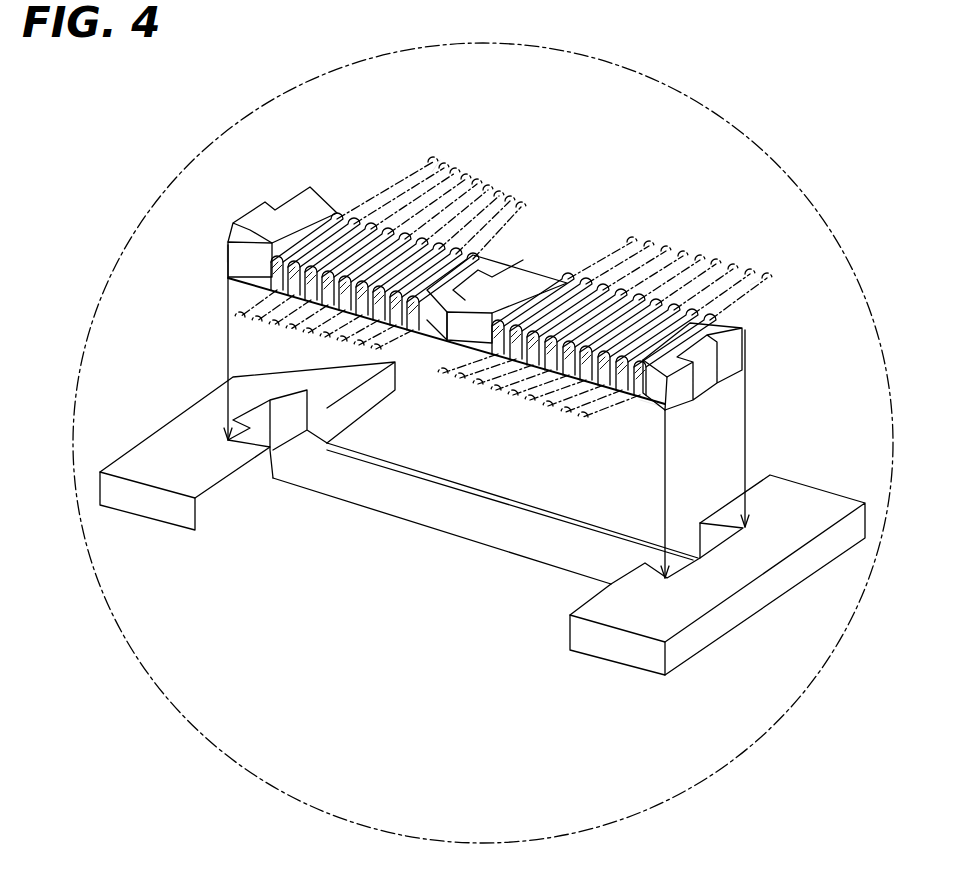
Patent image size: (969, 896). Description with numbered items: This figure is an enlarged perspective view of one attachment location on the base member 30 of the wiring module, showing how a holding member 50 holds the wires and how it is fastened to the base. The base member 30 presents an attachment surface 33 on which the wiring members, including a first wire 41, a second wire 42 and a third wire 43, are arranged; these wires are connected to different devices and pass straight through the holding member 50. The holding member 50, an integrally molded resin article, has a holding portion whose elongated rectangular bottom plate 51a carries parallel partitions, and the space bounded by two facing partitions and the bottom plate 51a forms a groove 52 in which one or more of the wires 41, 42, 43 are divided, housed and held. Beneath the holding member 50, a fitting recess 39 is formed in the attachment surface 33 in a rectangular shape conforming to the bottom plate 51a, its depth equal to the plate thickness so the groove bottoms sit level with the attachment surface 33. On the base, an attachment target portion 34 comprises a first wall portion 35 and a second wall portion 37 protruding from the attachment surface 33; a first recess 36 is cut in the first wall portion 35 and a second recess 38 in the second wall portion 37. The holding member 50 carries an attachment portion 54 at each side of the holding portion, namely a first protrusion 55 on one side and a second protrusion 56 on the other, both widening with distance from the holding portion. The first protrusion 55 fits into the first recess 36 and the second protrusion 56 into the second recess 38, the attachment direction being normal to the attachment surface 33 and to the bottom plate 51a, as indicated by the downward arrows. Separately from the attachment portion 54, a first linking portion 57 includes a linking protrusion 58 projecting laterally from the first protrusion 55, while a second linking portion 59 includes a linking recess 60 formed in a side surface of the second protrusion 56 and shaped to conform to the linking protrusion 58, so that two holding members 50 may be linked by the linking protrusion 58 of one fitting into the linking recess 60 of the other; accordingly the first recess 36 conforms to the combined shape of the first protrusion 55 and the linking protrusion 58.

The base member 30 is at (483, 469).
The attachment surface 33 is at (370, 788).
The attachment target portion 34 is at (479, 528).
The first wall portion 35 is at (143, 462).
The first recess 36 is at (302, 415).
The second wall portion 37 is at (693, 640).
The second recess 38 is at (712, 537).
The fitting recess 39 is at (478, 527).
The first wire 41 is at (530, 215).
The second wire 42 is at (722, 297).
The third wire 43 is at (420, 173).
The holding member 50 is at (443, 306).
The bottom plate 51a is at (637, 400).
The groove 52 is at (296, 327).
The attachment portion 54 is at (441, 336).
The first protrusion 55 is at (228, 237).
The second protrusion 56 is at (641, 412).
The first linking portion 57 is at (418, 249).
The linking protrusion 58 is at (258, 207).
The second linking portion 59 is at (486, 354).
The linking recess 60 is at (470, 305).